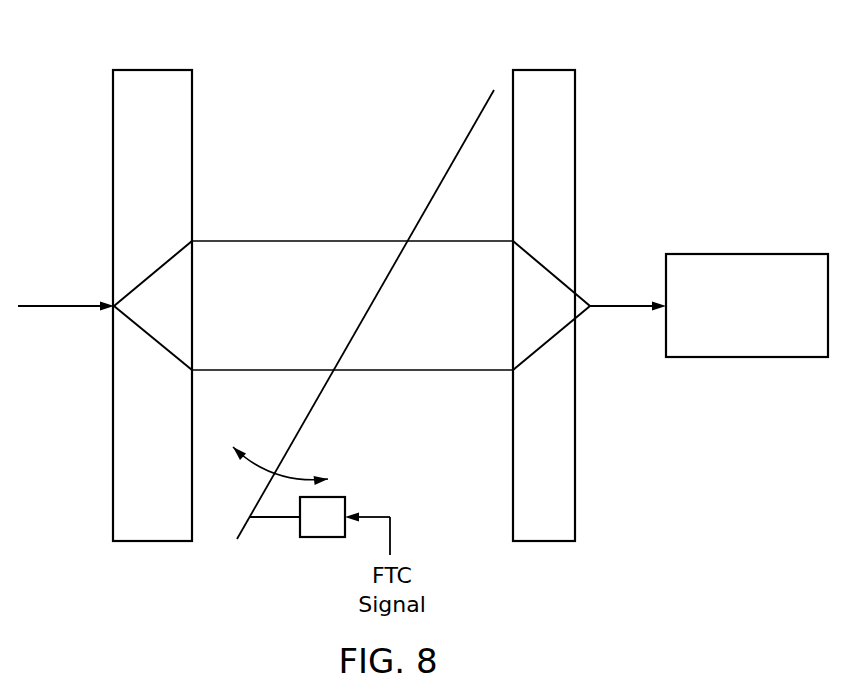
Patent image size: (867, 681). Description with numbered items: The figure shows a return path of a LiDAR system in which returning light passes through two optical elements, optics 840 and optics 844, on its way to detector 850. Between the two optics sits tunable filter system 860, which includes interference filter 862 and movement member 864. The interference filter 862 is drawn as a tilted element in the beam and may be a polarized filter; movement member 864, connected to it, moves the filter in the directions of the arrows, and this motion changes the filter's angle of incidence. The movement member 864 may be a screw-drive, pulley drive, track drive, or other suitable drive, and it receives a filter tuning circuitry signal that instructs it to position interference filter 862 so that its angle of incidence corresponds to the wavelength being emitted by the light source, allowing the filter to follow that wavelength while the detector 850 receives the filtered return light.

The optics 840 is at (153, 70).
The optics 844 is at (542, 70).
The detector 850 is at (747, 254).
The tunable filter system 860 is at (236, 70).
The interference filter 862 is at (312, 411).
The movement member 864 is at (322, 537).